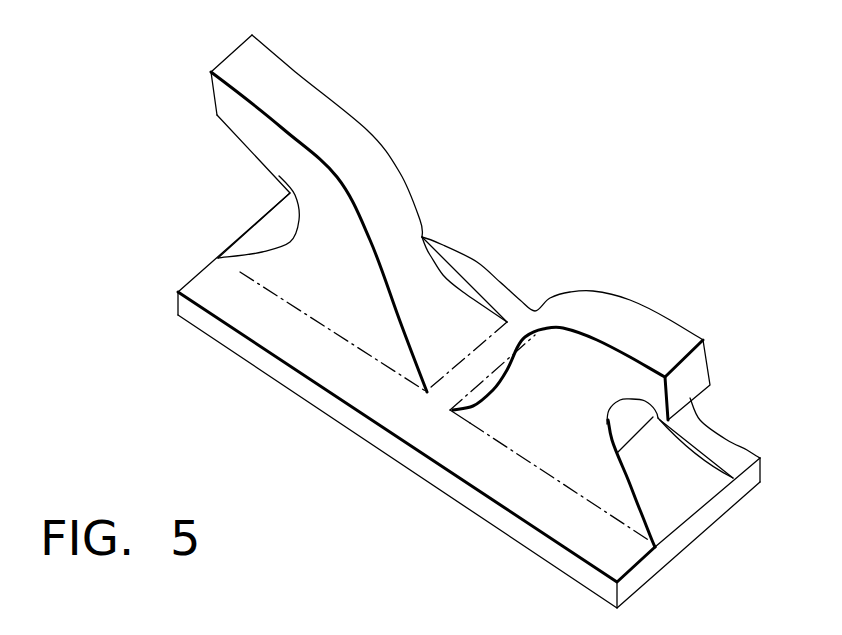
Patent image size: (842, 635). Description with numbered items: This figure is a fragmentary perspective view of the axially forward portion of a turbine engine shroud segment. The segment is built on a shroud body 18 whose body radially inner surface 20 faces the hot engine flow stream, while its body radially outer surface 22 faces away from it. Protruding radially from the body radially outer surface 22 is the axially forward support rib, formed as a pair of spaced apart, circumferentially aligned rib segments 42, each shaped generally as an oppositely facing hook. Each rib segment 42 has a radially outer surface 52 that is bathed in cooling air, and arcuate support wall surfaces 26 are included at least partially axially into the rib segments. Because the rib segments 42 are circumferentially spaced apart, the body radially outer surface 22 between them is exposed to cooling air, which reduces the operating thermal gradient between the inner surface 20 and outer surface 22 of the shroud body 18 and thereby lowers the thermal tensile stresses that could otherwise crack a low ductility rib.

The shroud body 18 is at (197, 315).
The body radially inner surface 20 is at (347, 423).
The body radially outer surface 22 is at (438, 422).
The support wall surface 26 is at (277, 174).
The rib segments 42 is at (350, 241).
The radially outer surface 52 is at (273, 73).